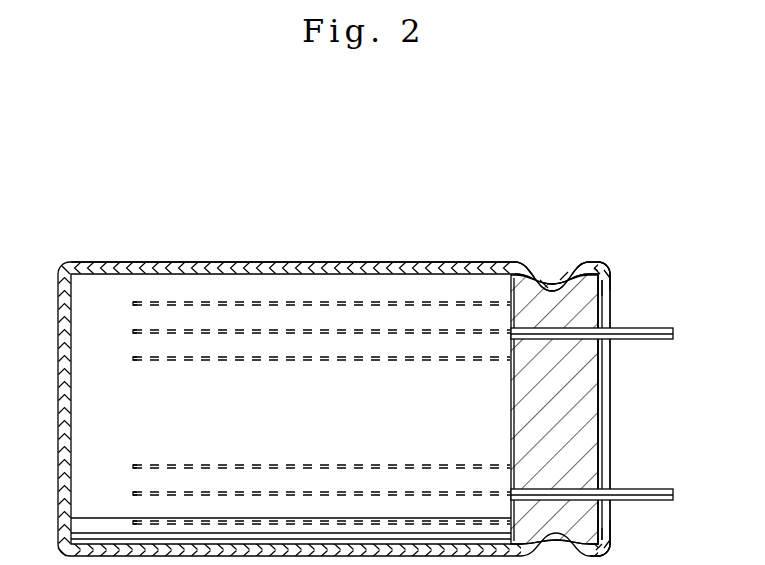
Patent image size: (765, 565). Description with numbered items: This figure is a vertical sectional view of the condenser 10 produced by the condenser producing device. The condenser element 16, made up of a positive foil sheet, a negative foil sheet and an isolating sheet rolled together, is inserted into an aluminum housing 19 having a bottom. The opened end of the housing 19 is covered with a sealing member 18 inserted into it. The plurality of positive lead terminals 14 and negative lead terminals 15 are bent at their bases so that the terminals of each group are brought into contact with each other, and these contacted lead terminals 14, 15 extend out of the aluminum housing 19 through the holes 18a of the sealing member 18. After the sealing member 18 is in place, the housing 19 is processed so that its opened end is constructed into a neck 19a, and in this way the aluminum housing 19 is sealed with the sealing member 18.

The condenser 10 is at (418, 220).
The positive lead terminals 14 is at (655, 328).
The negative lead terminals 15 is at (648, 489).
The condenser element 16 is at (302, 270).
The sealing member 18 is at (606, 386).
The holes 18a is at (580, 265).
The aluminum housing 19 is at (195, 263).
The neck 19a is at (553, 273).